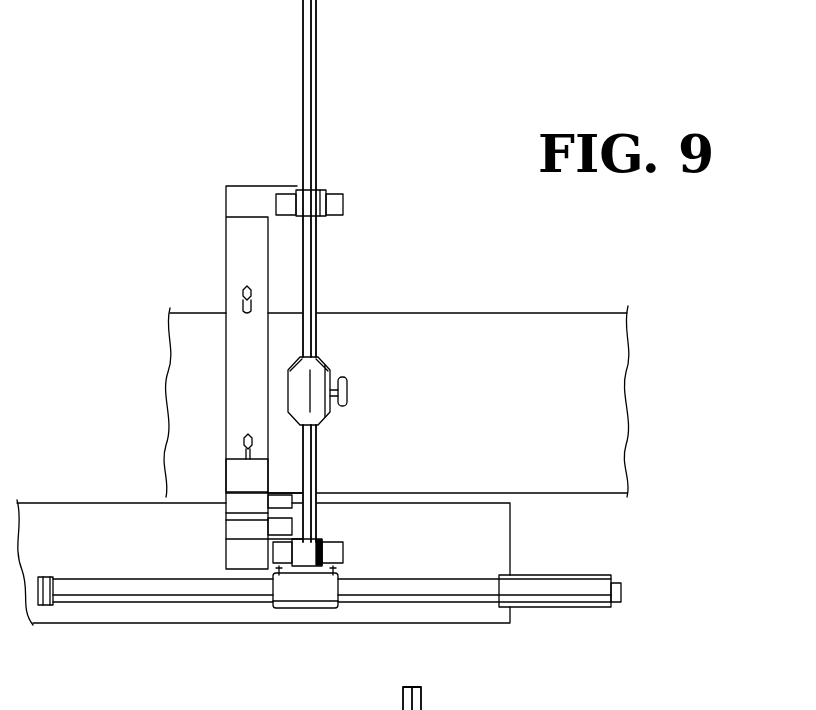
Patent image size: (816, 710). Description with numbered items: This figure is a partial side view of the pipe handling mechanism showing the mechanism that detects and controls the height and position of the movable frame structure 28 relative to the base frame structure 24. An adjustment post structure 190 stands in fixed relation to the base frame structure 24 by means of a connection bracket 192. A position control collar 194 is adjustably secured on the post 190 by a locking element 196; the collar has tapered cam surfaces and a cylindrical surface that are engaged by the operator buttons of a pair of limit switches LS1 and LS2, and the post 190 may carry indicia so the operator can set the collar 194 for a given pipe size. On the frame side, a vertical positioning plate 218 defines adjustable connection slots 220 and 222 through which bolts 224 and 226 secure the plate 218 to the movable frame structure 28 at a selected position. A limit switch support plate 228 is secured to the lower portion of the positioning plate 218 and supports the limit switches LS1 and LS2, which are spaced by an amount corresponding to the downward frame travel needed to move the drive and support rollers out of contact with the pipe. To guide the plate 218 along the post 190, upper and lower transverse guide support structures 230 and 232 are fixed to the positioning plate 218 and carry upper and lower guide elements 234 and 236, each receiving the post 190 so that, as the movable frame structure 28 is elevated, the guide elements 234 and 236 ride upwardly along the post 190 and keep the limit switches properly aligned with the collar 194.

The base frame structure 24 is at (500, 537).
The movable frame structure 28 is at (598, 346).
The adjustment post structure 190 is at (318, 272).
The connection bracket 192 is at (314, 588).
The position control collar 194 is at (325, 362).
The locking element 196 is at (344, 377).
The vertical positioning plate 218 is at (256, 243).
The adjustable connection slot 220 is at (243, 309).
The adjustable connection slot 222 is at (243, 450).
The bolt 224 is at (243, 290).
The bolt 226 is at (243, 443).
The limit switch support plate 228 is at (238, 470).
The upper transverse guide support structure 230 is at (333, 190).
The lower transverse guide support structure 232 is at (338, 543).
The upper guide element 234 is at (300, 203).
The lower guide element 236 is at (333, 572).
The limit switch LS1 is at (247, 530).
The limit switch LS2 is at (247, 510).